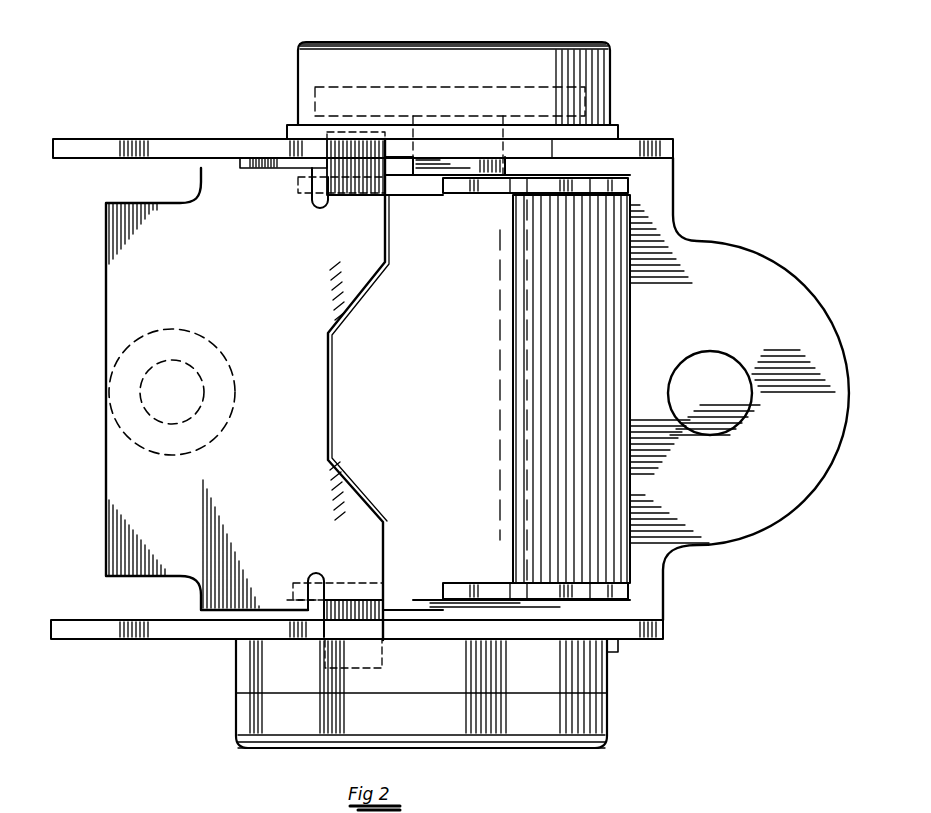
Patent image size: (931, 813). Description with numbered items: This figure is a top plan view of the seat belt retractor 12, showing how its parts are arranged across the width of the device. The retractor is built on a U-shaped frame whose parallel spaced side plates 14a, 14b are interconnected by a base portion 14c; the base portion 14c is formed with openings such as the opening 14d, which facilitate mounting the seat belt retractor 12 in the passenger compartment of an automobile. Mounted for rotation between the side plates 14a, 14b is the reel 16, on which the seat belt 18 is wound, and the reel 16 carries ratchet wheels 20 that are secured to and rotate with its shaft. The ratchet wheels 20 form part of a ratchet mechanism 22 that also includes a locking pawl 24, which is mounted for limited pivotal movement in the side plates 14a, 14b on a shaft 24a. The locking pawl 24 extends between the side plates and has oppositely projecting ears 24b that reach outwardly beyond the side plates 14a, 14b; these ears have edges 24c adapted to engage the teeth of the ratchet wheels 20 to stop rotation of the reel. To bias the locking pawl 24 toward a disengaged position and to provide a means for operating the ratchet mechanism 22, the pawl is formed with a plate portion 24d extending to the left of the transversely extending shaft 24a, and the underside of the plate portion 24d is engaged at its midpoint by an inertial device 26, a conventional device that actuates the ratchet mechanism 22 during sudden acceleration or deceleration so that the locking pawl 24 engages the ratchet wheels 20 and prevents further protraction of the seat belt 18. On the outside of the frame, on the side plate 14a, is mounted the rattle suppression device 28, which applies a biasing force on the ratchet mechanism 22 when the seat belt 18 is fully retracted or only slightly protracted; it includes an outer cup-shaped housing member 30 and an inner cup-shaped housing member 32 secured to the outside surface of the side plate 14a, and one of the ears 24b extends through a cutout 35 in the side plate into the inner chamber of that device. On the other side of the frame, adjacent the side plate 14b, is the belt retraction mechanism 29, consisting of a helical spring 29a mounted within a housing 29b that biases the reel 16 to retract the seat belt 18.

The seat belt retractor 12 is at (716, 224).
The side plate 14a is at (68, 619).
The side plate 14b is at (100, 138).
The base portion 14c is at (694, 481).
The opening 14d is at (728, 366).
The reel 16 is at (597, 389).
The seat belt 18 is at (636, 287).
The ratchet wheels 20 is at (631, 185).
The ratchet mechanism 22 is at (158, 182).
The locking pawl 24 is at (106, 323).
The shaft 24a is at (242, 160).
The ears 24b is at (356, 142).
The edges 24c is at (388, 596).
The plate portion 24d is at (190, 291).
The inertial device 26 is at (125, 436).
The rattle suppression device 28 is at (466, 712).
The belt retraction mechanism 29 is at (482, 91).
The spring 29a is at (598, 100).
The housing 29b is at (602, 42).
The outer cup-shaped housing member 30 is at (598, 748).
The inner cup-shaped housing member 32 is at (598, 672).
The cutout 35 is at (390, 640).